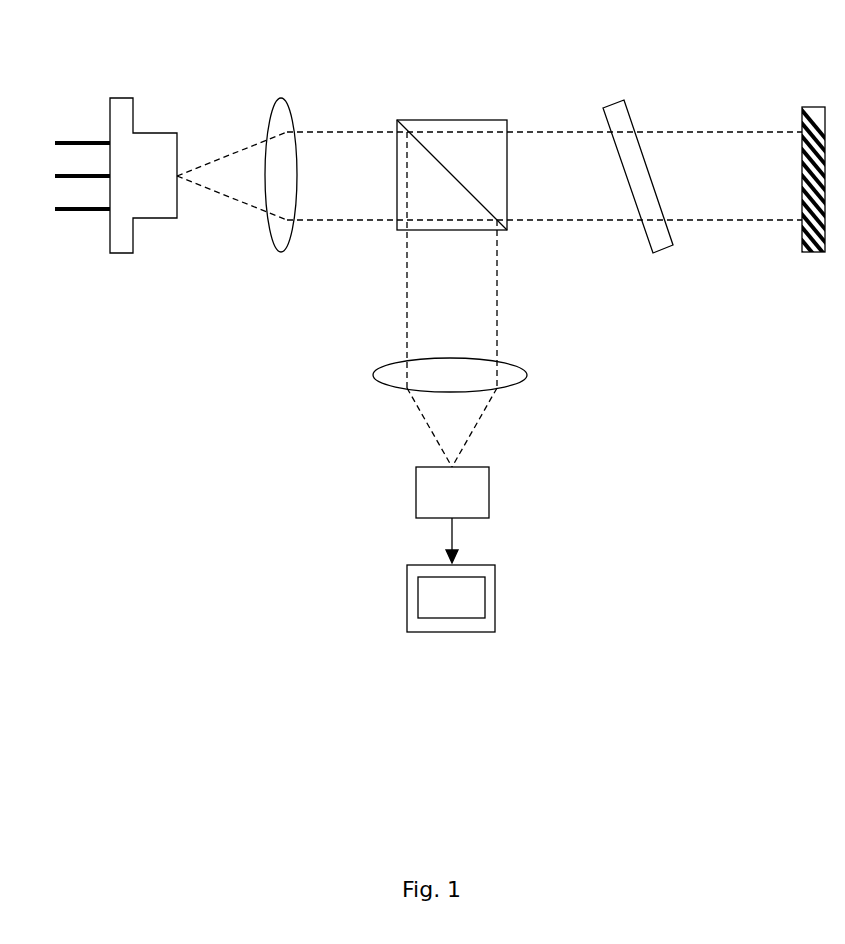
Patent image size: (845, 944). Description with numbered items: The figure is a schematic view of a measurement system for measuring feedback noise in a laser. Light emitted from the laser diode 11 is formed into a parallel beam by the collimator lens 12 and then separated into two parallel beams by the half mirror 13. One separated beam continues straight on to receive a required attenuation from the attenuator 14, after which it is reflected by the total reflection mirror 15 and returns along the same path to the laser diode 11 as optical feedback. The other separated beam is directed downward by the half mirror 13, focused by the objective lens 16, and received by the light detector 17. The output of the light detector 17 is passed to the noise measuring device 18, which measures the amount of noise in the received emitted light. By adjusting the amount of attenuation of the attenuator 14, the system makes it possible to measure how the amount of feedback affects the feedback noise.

The laser diode 11 is at (122, 94).
The collimator lens 12 is at (287, 101).
The half mirror 13 is at (417, 120).
The attenuator 14 is at (630, 99).
The total reflection mirror 15 is at (814, 107).
The objective lens 16 is at (527, 375).
The light detector 17 is at (489, 490).
The noise measuring device 18 is at (495, 593).